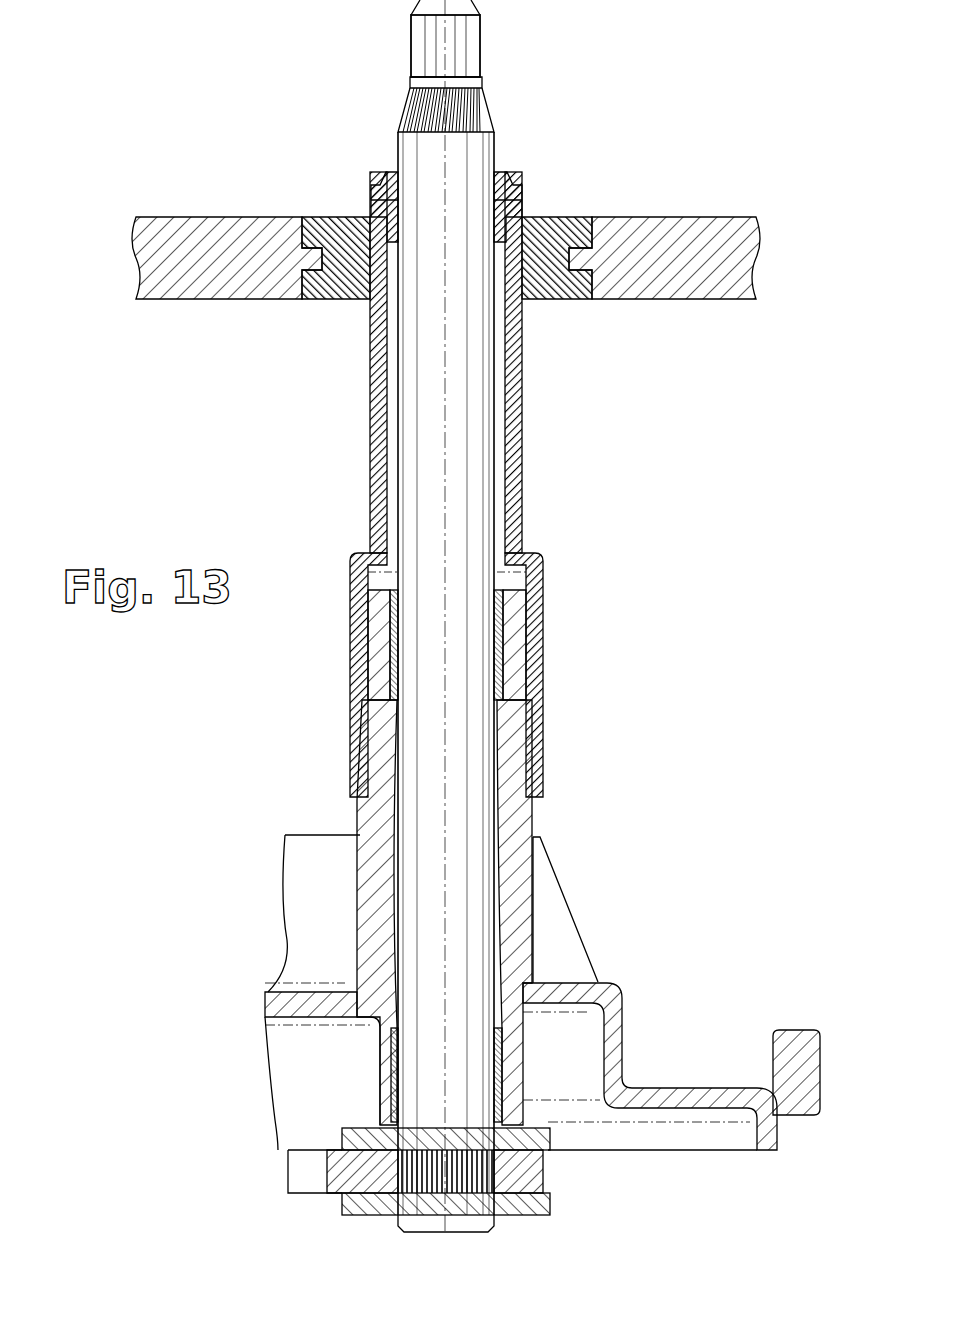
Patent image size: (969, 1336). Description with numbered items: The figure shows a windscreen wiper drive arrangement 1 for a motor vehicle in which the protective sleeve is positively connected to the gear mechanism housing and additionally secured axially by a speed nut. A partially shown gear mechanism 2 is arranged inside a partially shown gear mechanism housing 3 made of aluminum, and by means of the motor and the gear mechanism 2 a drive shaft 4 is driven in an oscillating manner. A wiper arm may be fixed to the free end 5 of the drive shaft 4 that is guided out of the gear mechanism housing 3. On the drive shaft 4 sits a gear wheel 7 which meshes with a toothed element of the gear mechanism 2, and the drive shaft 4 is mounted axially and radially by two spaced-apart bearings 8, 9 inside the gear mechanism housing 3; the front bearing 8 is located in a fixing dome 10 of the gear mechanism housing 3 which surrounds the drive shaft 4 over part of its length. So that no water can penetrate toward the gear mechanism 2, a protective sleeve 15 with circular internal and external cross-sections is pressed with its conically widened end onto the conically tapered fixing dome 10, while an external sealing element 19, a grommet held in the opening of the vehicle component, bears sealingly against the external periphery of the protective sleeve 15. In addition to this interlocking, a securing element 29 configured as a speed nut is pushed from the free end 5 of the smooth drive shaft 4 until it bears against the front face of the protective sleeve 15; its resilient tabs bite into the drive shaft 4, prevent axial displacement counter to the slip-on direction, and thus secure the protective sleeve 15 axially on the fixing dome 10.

The windscreen wiper drive arrangement 1 is at (715, 602).
The gear mechanism 2 is at (310, 1185).
The gear mechanism housing 3 is at (800, 1040).
The drive shaft 4 is at (475, 542).
The free end 5 is at (473, 52).
The gear wheel 7 is at (382, 1177).
The front bearing 8 is at (503, 627).
The bearing 9 is at (500, 1057).
The fixing dome 10 is at (518, 812).
The protective sleeve 15 is at (522, 397).
The external sealing element 19 is at (547, 220).
The securing element 29 is at (510, 172).